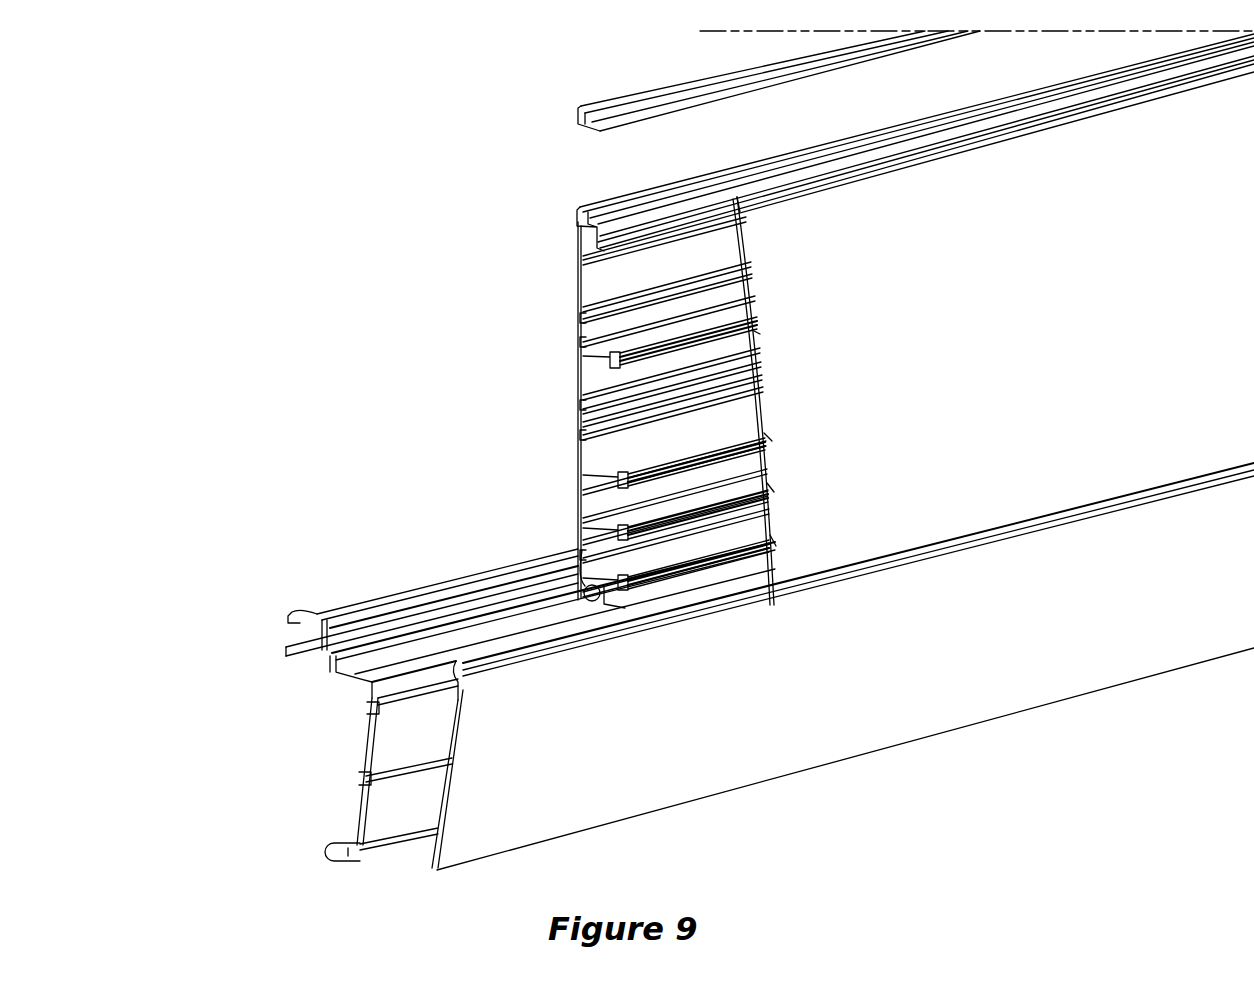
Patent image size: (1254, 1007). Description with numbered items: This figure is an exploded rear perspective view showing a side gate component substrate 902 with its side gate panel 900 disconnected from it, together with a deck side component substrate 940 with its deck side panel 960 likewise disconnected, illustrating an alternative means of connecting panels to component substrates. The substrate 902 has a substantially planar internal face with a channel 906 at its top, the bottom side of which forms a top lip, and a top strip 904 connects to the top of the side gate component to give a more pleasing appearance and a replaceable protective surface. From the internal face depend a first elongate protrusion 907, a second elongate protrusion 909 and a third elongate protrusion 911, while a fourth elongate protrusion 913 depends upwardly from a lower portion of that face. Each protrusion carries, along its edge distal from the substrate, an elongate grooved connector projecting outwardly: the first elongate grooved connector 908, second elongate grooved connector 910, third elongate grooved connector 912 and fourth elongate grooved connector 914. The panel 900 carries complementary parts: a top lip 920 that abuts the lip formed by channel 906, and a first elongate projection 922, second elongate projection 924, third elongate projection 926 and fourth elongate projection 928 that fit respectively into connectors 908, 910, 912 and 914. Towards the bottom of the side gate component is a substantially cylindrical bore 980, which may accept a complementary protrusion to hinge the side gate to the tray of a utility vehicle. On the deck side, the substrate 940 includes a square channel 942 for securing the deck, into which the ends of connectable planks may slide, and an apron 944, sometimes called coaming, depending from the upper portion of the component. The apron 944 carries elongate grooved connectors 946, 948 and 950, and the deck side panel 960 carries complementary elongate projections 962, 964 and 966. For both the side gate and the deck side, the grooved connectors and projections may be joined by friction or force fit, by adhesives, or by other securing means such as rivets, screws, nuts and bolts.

The side gate panel 900 is at (1166, 313).
The side gate component substrate 902 is at (562, 345).
The top strip 904 is at (612, 107).
The channel 906 is at (578, 230).
The first elongate protrusion 907 is at (750, 305).
The first elongate grooved connector 908 is at (642, 368).
The second elongate protrusion 909 is at (752, 422).
The second elongate grooved connector 910 is at (756, 447).
The third elongate protrusion 911 is at (650, 487).
The third elongate grooved connector 912 is at (650, 538).
The fourth elongate protrusion 913 is at (618, 604).
The fourth elongate grooved connector 914 is at (657, 589).
The top lip 920 is at (742, 204).
The first elongate projection 922 is at (757, 335).
The second elongate projection 924 is at (769, 439).
The third elongate projection 926 is at (771, 490).
The fourth elongate projection 928 is at (774, 543).
The deck side component substrate 940 is at (257, 720).
The square channel 942 is at (278, 649).
The apron 944 is at (325, 771).
The elongate grooved connector 946 is at (405, 718).
The elongate grooved connector 948 is at (402, 788).
The elongate grooved connector 950 is at (388, 860).
The deck side panel 960 is at (643, 772).
The elongate projection 962 is at (448, 692).
The elongate projection 964 is at (435, 764).
The elongate projection 966 is at (425, 837).
The substantially cylindrical bore 980 is at (570, 605).